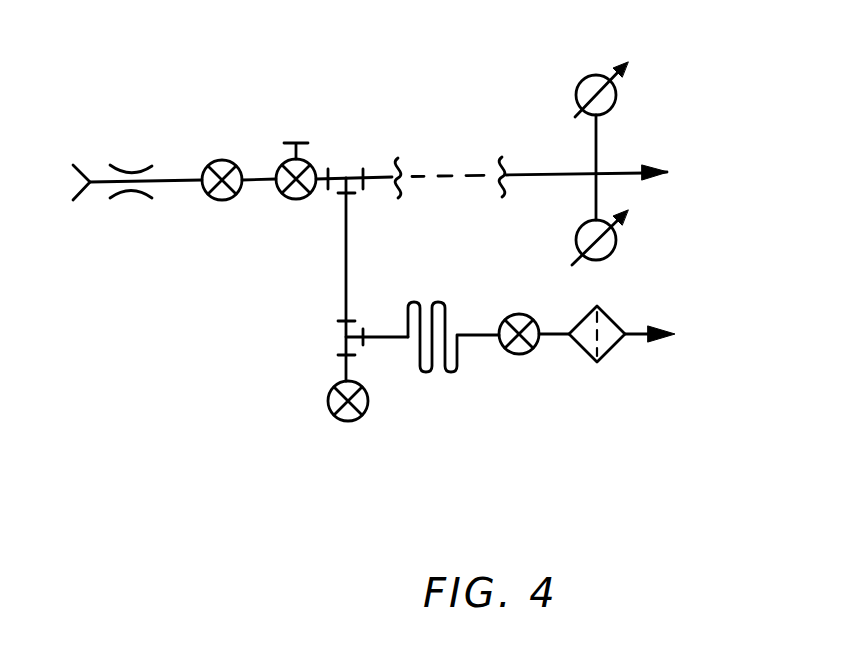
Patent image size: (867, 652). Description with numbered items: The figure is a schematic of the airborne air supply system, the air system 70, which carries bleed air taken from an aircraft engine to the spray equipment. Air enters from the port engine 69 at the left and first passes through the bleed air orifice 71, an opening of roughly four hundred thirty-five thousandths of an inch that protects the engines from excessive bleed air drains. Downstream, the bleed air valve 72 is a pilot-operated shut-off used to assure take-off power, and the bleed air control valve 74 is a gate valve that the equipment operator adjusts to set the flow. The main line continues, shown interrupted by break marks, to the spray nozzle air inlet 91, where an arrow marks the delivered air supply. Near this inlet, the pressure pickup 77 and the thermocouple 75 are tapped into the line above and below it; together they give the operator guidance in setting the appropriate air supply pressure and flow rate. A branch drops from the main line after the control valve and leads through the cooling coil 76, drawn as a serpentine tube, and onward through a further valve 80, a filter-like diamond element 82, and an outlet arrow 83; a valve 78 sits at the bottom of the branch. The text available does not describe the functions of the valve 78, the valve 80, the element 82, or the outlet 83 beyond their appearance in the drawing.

The port engine 69 is at (76, 184).
The air system 70 is at (650, 122).
The bleed air orifice 71 is at (131, 196).
The bleed air valve 72 is at (245, 118).
The bleed air control valve 74 is at (304, 160).
The thermocouple 75 is at (615, 238).
The cooling coil 76 is at (415, 300).
The pressure pickup 77 is at (590, 76).
The valve 78 is at (338, 422).
The valve 80 is at (519, 355).
The filter 82 is at (612, 348).
The outlet 83 is at (678, 333).
The spray nozzle air inlet 91 is at (673, 169).